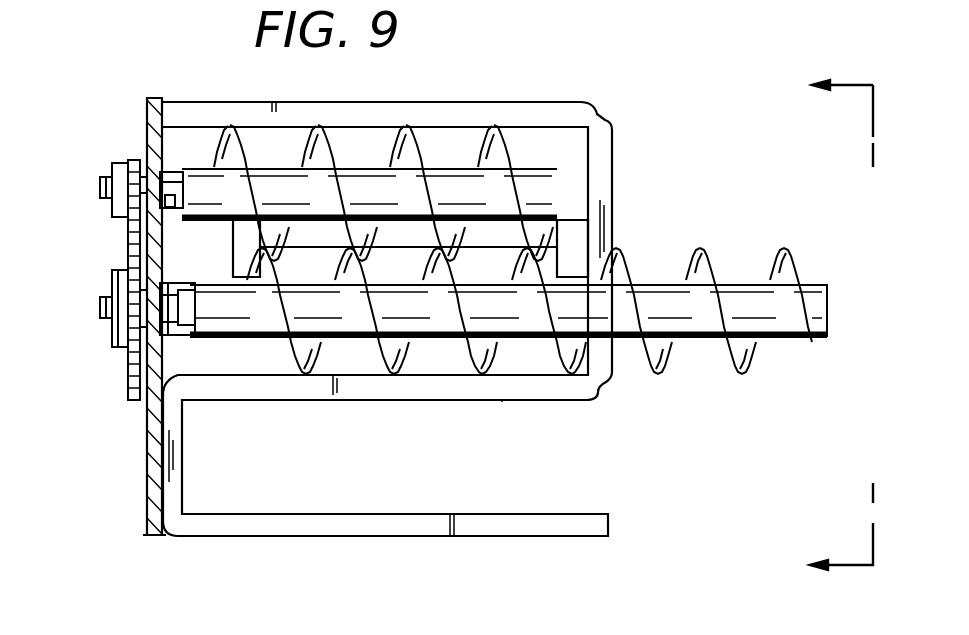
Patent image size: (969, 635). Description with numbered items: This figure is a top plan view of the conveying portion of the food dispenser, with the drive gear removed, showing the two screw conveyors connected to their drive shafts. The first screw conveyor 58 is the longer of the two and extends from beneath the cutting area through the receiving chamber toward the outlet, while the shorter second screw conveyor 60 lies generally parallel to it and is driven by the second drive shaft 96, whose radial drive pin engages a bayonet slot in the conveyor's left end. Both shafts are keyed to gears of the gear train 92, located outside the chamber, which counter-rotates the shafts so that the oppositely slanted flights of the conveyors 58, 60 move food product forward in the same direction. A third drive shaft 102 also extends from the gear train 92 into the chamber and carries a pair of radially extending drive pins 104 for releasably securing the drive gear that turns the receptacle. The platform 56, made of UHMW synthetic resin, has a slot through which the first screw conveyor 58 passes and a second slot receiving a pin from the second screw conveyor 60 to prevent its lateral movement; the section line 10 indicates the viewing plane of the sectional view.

The section line 10 is at (834, 325).
The platform 56 is at (508, 528).
The first screw conveyor 58 is at (788, 328).
The second screw conveyor 60 is at (520, 180).
The gear train 92 is at (110, 242).
The second drive shaft 96 is at (176, 178).
The third drive shaft 102 is at (150, 340).
The drive pins 104 is at (176, 282).